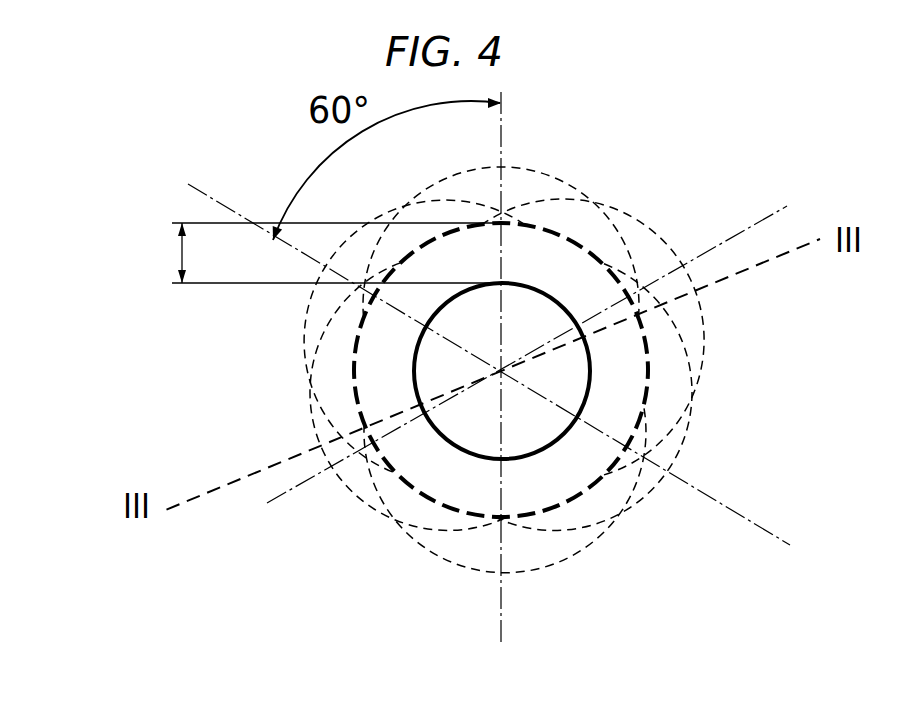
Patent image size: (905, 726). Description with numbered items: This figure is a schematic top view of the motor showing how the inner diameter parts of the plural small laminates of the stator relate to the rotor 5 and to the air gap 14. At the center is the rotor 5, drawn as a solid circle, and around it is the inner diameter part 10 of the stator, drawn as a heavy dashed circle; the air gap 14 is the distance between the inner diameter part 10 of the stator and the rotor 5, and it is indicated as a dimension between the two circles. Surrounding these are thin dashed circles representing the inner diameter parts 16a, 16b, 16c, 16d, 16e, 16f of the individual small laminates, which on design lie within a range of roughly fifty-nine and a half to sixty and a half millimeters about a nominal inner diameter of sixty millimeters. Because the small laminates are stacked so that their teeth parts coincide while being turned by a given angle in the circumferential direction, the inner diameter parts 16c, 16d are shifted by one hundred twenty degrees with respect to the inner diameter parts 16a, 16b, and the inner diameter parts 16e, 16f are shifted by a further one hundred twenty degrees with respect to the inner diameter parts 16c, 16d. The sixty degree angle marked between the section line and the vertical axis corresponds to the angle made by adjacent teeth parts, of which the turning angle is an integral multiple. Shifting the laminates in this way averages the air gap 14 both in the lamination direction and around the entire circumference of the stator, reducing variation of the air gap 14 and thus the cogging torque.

The rotor 5 is at (538, 455).
The inner diameter part 10 is at (615, 453).
The air gap 14 is at (310, 253).
The inner diameter part 16a is at (308, 328).
The inner diameter part 16b is at (316, 397).
The inner diameter part 16c is at (370, 503).
The inner diameter part 16d is at (441, 431).
The inner diameter part 16e is at (482, 570).
The inner diameter part 16f is at (498, 423).